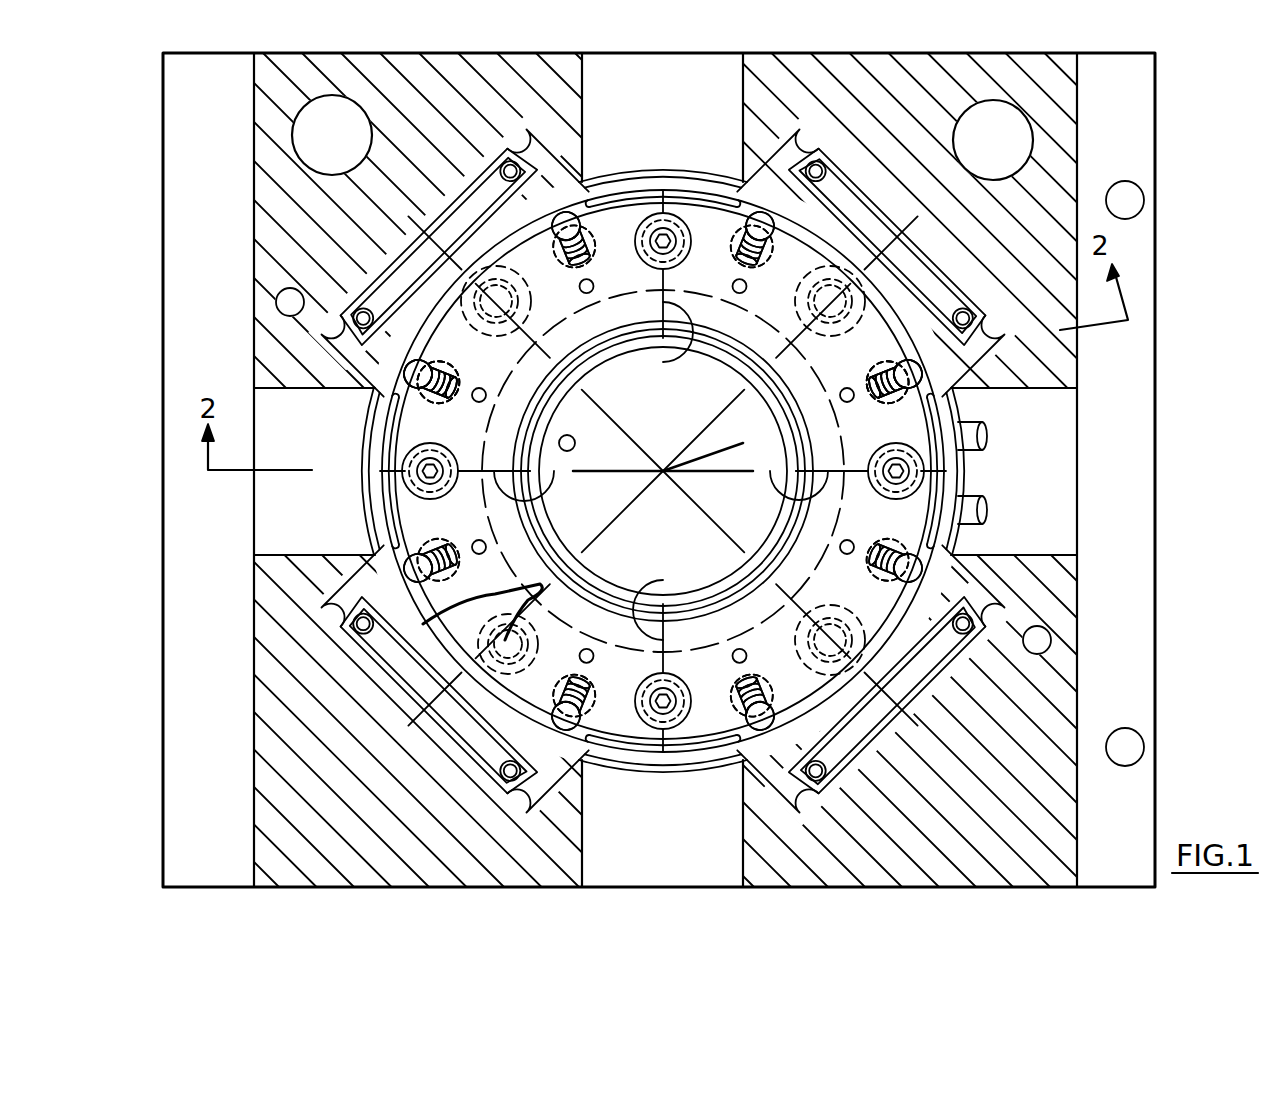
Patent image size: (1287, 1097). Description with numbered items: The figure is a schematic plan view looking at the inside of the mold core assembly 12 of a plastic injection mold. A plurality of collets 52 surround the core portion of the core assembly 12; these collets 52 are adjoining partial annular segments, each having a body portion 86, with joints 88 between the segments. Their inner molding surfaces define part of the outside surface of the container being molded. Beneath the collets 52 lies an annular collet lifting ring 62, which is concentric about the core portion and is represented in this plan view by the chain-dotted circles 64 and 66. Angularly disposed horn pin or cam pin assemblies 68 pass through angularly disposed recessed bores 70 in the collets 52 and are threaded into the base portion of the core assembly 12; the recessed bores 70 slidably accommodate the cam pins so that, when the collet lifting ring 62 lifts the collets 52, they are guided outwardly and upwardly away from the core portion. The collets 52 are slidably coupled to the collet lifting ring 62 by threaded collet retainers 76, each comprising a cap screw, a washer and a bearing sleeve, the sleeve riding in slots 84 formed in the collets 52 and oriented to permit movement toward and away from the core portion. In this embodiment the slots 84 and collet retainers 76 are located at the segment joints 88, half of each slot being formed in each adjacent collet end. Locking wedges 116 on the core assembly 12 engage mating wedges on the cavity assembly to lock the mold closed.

The mold core assembly 12 is at (1162, 422).
The collets 52 is at (612, 326).
The collet lifting ring 62 is at (463, 644).
The chain-dotted circle 64 is at (447, 373).
The chain-dotted circle 66 is at (829, 371).
The cam pin assemblies 68 is at (566, 225).
The recessed bores 70 is at (590, 248).
The collet retainers 76 is at (634, 212).
The slots 84 is at (676, 243).
The body portion 86 is at (538, 297).
The joints 88 is at (692, 325).
The locking wedges 116 is at (470, 213).